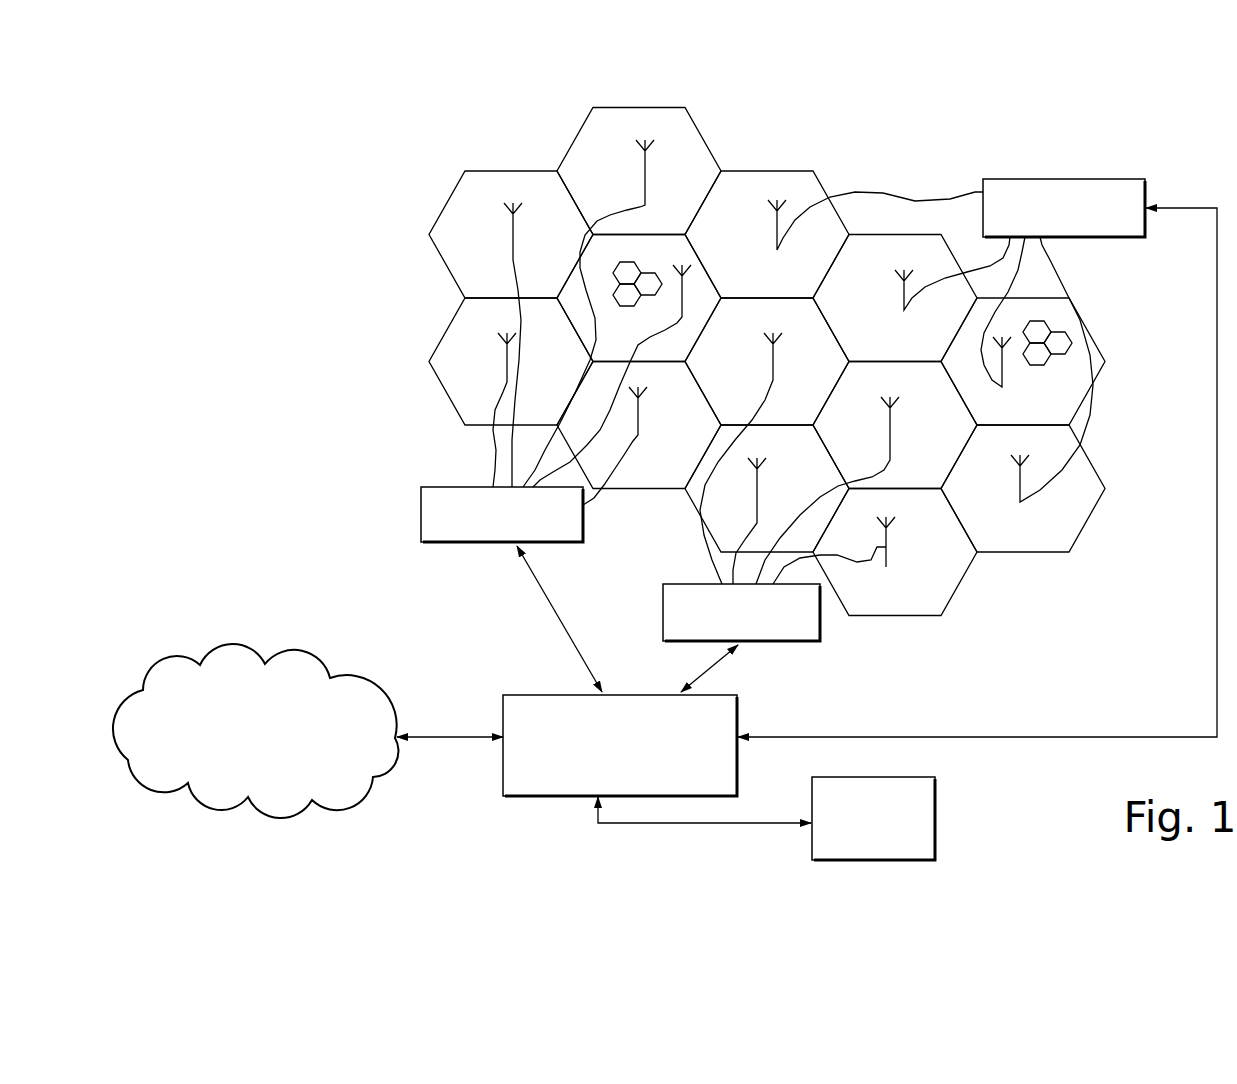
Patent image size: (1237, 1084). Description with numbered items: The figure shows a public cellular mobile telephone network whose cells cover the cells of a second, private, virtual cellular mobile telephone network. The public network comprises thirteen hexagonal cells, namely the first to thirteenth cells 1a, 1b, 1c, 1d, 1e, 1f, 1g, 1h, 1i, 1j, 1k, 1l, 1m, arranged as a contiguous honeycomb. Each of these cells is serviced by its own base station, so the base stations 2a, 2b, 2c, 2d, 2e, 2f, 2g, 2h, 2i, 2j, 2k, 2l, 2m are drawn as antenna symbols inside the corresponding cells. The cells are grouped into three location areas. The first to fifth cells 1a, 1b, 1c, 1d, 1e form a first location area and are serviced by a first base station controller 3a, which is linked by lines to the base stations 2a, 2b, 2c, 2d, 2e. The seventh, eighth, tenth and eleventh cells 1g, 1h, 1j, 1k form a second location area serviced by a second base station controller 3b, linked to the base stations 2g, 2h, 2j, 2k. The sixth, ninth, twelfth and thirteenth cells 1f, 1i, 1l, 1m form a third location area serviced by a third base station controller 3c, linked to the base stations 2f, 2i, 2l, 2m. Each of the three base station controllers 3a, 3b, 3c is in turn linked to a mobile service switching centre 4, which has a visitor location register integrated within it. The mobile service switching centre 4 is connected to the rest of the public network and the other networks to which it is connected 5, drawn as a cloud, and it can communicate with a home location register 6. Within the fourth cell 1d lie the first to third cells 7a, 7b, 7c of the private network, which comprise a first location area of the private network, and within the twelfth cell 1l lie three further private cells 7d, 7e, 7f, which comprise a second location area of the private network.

The first cell 1a is at (455, 257).
The second cell 1b is at (448, 376).
The third cell 1c is at (585, 146).
The fourth cell 1d is at (678, 244).
The fifth cell 1e is at (655, 481).
The sixth cell 1f is at (775, 188).
The seventh cell 1g is at (798, 312).
The eighth cell 1h is at (700, 507).
The ninth cell 1i is at (880, 242).
The tenth cell 1j is at (924, 378).
The eleventh cell 1k is at (890, 610).
The twelfth cell 1l is at (1097, 368).
The thirteenth cell 1m is at (1027, 548).
The base station 2a is at (515, 228).
The base station 2b is at (507, 350).
The base station 2c is at (647, 175).
The base station 2d is at (684, 296).
The base station 2e is at (640, 412).
The base station 2f is at (777, 230).
The base station 2g is at (773, 357).
The base station 2h is at (759, 482).
The base station 2i is at (904, 296).
The base station 2j is at (891, 412).
The base station 2k is at (887, 537).
The base station 2l is at (1003, 380).
The base station 2m is at (1020, 478).
The first base station controller 3a is at (421, 505).
The second base station controller 3b is at (663, 606).
The third base station controller 3c is at (1105, 180).
The mobile service switching centre 4 is at (541, 796).
The public network and connected networks 5 is at (322, 766).
The home location register 6 is at (935, 803).
The first cell of private network 7a is at (618, 272).
The second cell of private network 7b is at (660, 284).
The third cell of private network 7c is at (628, 308).
The cell of private network 7d is at (1036, 322).
The cell of private network 7e is at (1072, 350).
The cell of private network 7f is at (1043, 367).